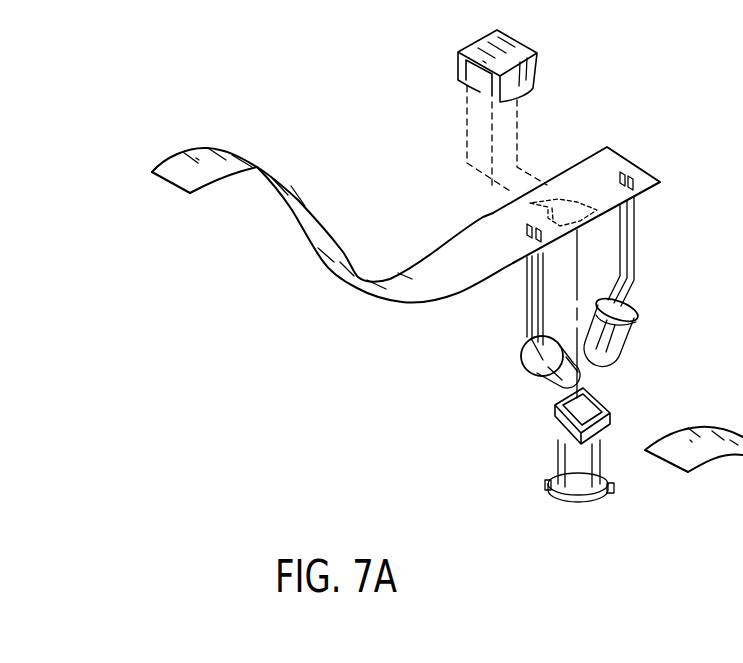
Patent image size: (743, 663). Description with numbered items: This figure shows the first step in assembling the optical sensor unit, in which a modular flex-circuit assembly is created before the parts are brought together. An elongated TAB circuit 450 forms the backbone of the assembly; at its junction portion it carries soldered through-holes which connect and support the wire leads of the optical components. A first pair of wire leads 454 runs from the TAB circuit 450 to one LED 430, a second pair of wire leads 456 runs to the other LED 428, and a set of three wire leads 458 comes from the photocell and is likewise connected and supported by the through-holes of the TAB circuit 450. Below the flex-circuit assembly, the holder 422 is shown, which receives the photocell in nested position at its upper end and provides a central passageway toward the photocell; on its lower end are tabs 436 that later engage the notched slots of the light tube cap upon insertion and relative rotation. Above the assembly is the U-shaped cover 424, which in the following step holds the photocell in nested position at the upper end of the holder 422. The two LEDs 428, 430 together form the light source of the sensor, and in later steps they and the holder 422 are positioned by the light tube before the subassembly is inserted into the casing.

The holder 422 is at (576, 461).
The cover 424 is at (527, 45).
The LED 428 is at (550, 385).
The LED 430 is at (620, 341).
The tabs 436 is at (548, 484).
The TAB circuit 450 is at (441, 278).
The first pair of wire leads 454 is at (634, 260).
The second pair of wire leads 456 is at (527, 293).
The set of three wire leads 458 is at (563, 197).